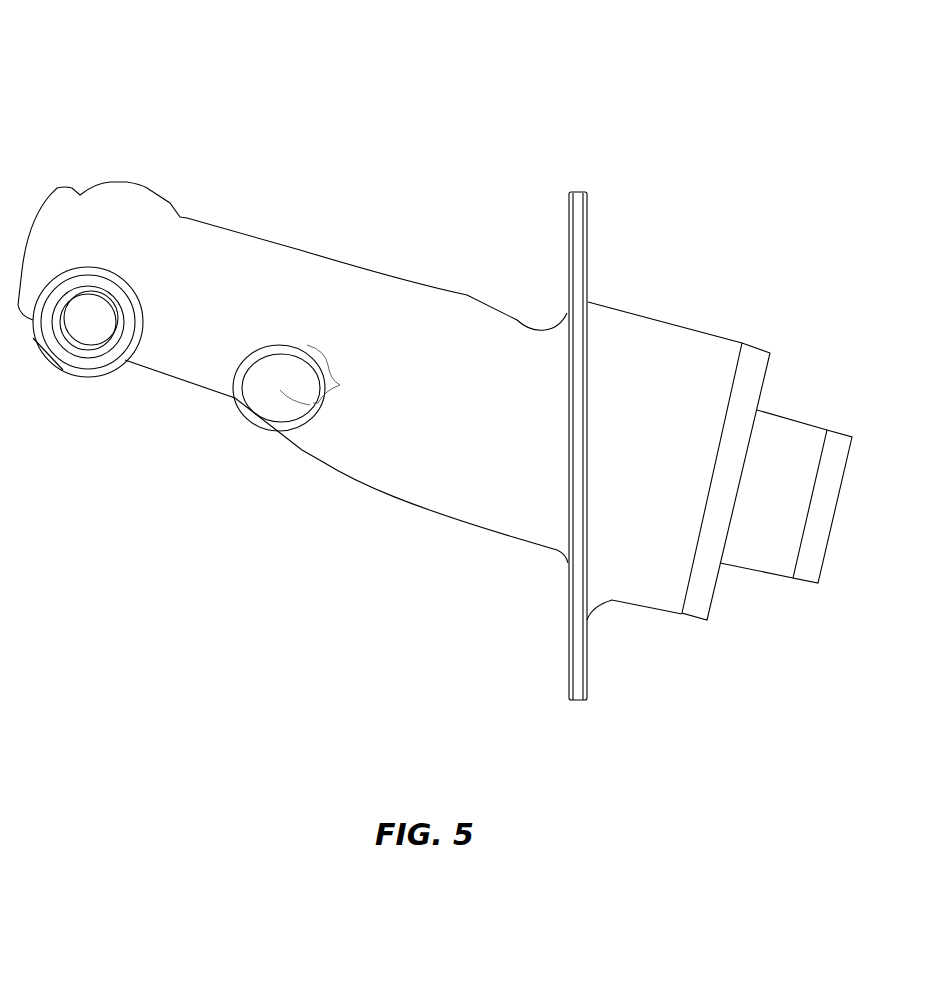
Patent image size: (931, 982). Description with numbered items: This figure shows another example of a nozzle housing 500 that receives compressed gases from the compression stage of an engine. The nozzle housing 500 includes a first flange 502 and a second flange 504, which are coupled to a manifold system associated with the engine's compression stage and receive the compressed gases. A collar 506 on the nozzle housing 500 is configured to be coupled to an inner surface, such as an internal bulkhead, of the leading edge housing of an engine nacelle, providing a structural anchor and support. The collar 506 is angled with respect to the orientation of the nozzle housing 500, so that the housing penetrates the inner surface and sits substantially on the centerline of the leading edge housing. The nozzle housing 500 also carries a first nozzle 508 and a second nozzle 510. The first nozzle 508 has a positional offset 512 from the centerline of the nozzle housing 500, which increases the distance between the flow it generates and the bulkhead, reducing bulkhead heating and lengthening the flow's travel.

The nozzle housing 500 is at (715, 38).
The first flange 502 is at (807, 562).
The second flange 504 is at (700, 602).
The collar 506 is at (577, 368).
The first nozzle 508 is at (237, 395).
The second nozzle 510 is at (75, 270).
The positional offset 512 is at (328, 350).